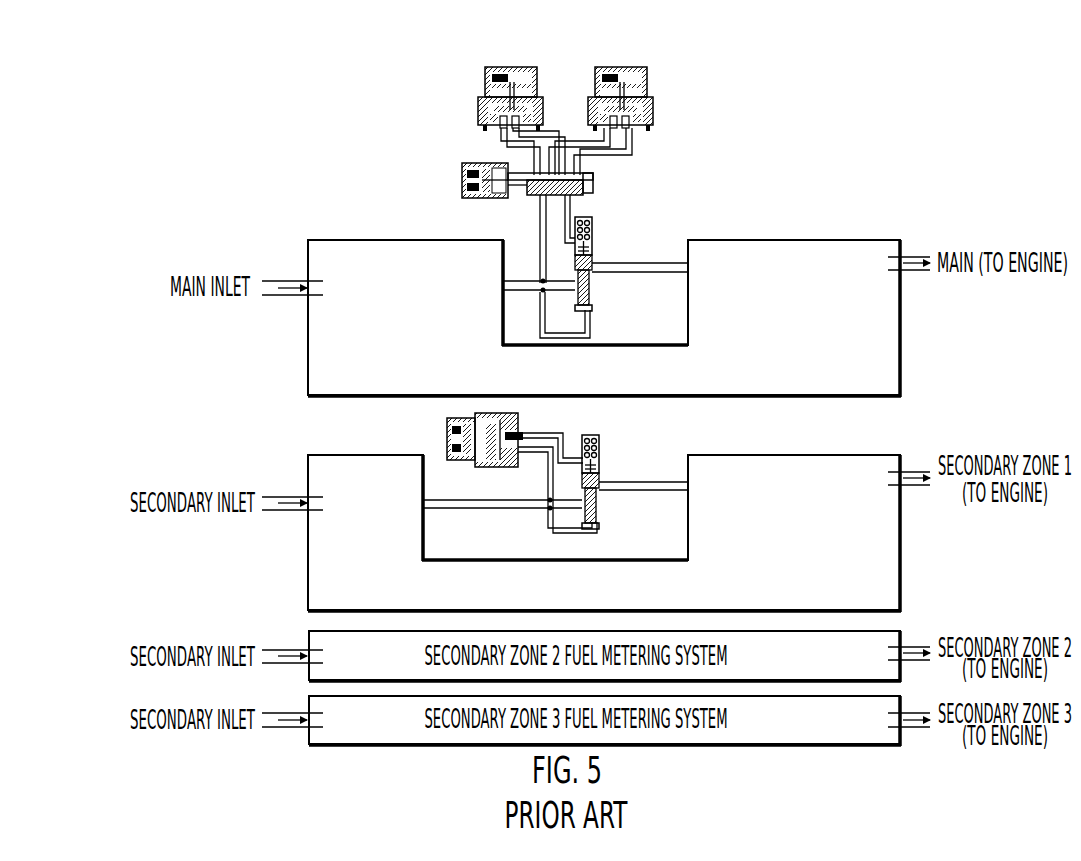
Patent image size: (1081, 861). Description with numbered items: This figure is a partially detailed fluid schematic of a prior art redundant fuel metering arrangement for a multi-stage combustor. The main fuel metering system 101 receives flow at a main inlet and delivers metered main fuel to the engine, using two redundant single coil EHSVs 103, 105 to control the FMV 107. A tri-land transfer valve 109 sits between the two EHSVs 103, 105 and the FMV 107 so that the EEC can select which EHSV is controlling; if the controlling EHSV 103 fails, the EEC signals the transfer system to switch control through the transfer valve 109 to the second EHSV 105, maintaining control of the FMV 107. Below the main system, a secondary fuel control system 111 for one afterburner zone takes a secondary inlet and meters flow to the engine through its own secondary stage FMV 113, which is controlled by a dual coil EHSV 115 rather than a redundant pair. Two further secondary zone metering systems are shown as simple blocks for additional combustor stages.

The main fuel metering system 101 is at (790, 239).
The first EHSV 103 is at (472, 75).
The second EHSV 105 is at (653, 75).
The FMV 107 is at (594, 308).
The transfer valve 109 is at (593, 187).
The secondary fuel control system 111 is at (902, 567).
The secondary stage FMV 113 is at (599, 506).
The dual coil EHSV 115 is at (522, 430).